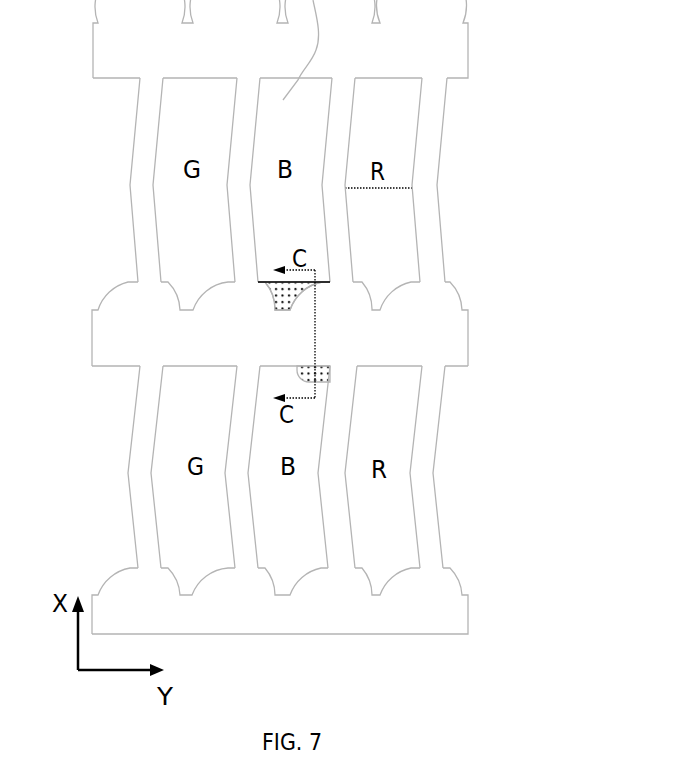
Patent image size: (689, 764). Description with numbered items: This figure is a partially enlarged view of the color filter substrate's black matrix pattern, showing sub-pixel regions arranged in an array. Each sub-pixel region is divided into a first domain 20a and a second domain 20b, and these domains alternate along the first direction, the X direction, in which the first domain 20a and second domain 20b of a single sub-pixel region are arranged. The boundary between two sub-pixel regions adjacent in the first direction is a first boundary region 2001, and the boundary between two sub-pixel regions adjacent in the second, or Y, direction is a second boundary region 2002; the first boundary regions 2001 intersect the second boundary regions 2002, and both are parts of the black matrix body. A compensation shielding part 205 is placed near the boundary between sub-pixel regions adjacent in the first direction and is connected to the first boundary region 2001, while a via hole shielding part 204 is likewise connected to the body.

The first boundary region 2001 is at (185, 332).
The second boundary region 2002 is at (142, 162).
The compensation shielding part 205 is at (267, 282).
The via hole shielding part 204 is at (318, 381).
The first domain 20a is at (400, 119).
The second domain 20b is at (402, 271).